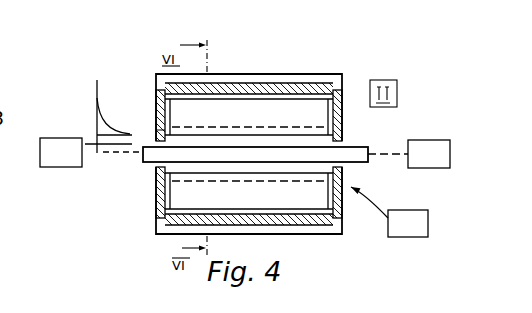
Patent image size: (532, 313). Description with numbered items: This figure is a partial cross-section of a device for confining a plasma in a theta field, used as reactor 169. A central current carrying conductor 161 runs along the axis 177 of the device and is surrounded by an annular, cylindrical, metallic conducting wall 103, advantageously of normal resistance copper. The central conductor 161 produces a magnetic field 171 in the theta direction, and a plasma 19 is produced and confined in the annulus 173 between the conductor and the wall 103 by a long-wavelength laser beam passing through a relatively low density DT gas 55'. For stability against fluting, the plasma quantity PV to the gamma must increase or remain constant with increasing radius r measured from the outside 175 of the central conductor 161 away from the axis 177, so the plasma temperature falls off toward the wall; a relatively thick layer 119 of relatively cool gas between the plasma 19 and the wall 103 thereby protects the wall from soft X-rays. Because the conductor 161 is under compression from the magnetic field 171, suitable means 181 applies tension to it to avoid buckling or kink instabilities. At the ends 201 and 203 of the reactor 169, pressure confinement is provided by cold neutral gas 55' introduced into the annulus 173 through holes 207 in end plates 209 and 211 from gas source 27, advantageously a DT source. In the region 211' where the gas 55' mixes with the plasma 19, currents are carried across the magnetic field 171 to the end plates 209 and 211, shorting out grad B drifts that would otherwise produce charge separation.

The plasma 19 is at (293, 164).
The gas source 27 is at (418, 237).
The DT gas 55' is at (360, 225).
The conducting wall 103 is at (115, 248).
The layer of relatively cool gas 119 is at (135, 172).
The central current carrying conductor 161 is at (352, 144).
The reactor 169 is at (164, 238).
The magnetic field 171 is at (182, 128).
The annulus 173 is at (213, 173).
The outside of the central conductor 175 is at (153, 140).
The axis of the conductor 177 is at (87, 145).
The tension applying means 181 is at (55, 168).
The end of reactor 201 is at (357, 80).
The end of reactor 203 is at (98, 70).
The holes 207 is at (158, 136).
The end plate 209 is at (327, 125).
The end plate 211 is at (141, 192).
The mixing region 211' is at (176, 74).